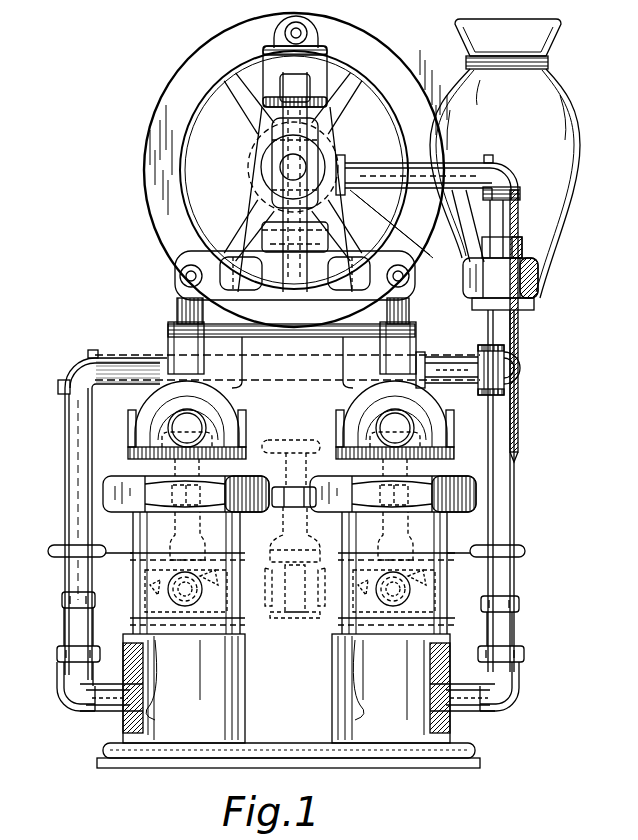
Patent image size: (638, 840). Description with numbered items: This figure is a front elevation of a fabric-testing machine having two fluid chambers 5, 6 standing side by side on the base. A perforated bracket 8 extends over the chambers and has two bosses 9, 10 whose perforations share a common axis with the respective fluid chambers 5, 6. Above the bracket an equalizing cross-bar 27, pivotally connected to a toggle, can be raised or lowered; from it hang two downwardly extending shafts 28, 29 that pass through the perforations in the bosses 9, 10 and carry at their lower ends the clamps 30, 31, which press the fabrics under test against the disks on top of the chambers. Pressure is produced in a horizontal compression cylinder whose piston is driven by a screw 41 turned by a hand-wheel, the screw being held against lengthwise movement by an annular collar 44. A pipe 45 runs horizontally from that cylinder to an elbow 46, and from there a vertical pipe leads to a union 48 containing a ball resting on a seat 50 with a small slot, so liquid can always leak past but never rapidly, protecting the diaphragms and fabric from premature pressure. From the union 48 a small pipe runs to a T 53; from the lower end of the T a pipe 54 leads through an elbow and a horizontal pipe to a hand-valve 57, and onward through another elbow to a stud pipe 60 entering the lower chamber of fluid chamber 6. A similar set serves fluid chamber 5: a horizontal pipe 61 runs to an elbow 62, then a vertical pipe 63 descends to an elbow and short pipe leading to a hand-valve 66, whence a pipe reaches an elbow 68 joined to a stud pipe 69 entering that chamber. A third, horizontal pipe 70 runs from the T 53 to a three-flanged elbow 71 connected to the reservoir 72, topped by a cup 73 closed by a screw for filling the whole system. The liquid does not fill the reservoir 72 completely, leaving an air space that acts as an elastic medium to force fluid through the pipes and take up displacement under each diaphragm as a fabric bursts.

The fluid chamber 5 is at (242, 622).
The fluid chamber 6 is at (335, 622).
The perforated bracket 8 is at (322, 340).
The boss 9 is at (170, 346).
The boss 10 is at (412, 334).
The equalizing cross-bar 27 is at (278, 280).
The shaft 28 is at (410, 300).
The shaft 29 is at (178, 310).
The clamp 30 is at (142, 410).
The clamp 31 is at (432, 412).
The screw 41 is at (520, 220).
The annular collar 44 is at (514, 255).
The pipe 45 is at (413, 163).
The elbow 46 is at (498, 162).
The union 48 is at (540, 275).
The seat 50 is at (534, 290).
The T 53 is at (520, 346).
The pipe 54 is at (514, 524).
The hand-valve 57 is at (522, 654).
The stud pipe 60 is at (470, 712).
The horizontal pipe 61 is at (462, 356).
The elbow 62 is at (80, 355).
The vertical pipe 63 is at (66, 440).
The hand-valve 66 is at (62, 630).
The elbow 68 is at (56, 706).
The stud pipe 69 is at (105, 714).
The pipe 70 is at (522, 374).
The three-flanged elbow 71 is at (524, 362).
The reservoir 72 is at (566, 172).
The cup 73 is at (558, 36).